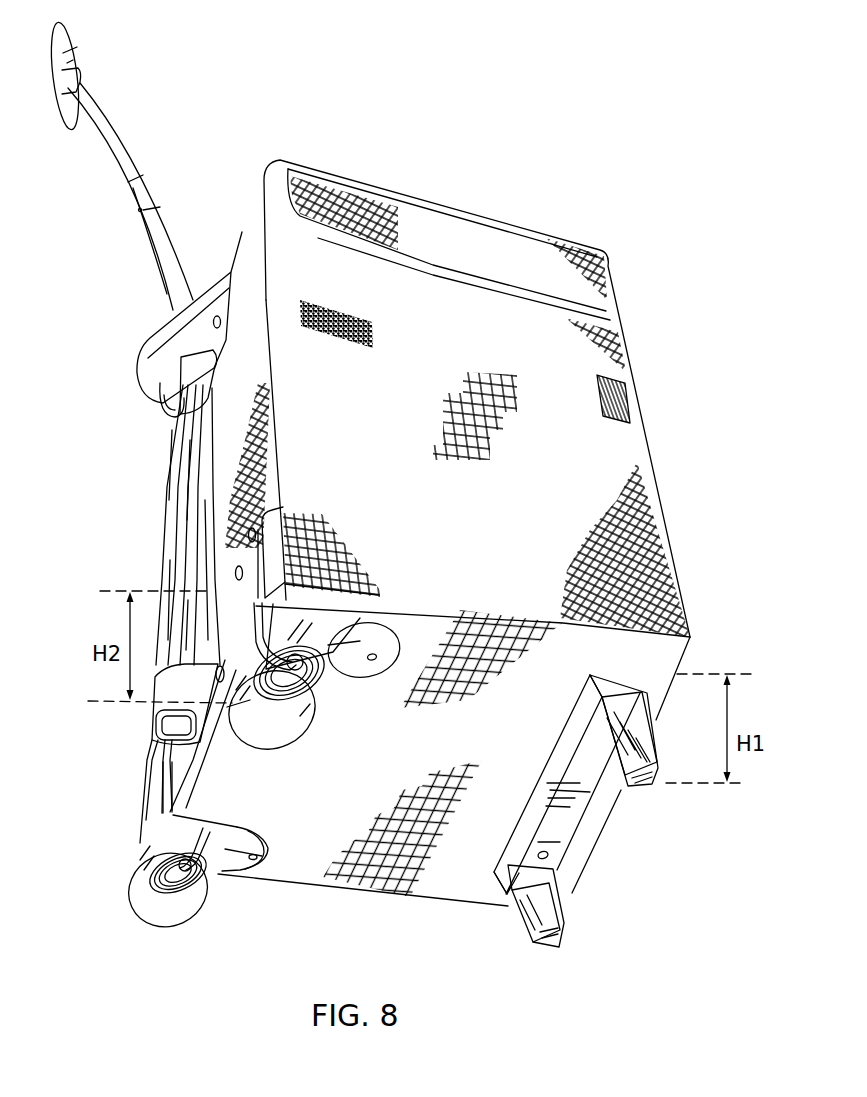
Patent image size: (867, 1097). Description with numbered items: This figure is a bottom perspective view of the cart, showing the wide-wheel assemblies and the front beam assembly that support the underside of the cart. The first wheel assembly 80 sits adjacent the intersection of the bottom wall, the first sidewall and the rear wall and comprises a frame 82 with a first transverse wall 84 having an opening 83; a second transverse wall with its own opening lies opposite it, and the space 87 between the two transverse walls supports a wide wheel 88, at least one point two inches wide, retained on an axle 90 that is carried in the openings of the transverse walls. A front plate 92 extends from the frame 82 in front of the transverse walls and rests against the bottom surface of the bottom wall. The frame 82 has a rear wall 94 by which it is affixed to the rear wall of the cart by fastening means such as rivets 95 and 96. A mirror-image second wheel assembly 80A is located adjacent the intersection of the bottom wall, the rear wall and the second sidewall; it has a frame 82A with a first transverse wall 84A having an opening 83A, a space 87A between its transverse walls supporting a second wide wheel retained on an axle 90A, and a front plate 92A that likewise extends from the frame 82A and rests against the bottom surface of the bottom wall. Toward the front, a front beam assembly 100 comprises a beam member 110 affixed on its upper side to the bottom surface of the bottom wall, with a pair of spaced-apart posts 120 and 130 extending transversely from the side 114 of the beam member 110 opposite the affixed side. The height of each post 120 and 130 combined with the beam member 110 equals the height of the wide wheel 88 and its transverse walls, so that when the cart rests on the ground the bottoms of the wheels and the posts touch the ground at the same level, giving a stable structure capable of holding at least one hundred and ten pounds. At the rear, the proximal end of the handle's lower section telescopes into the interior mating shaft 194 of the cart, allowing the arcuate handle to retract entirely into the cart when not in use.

The interior mating shaft 194 is at (181, 489).
The rivet 96 is at (240, 577).
The rivet 95 is at (262, 530).
The rear wall 94 is at (283, 553).
The frame 82 is at (272, 592).
The first transverse wall 84 is at (343, 620).
The front plate 92 is at (383, 645).
The opening 83 is at (320, 660).
The space 87 is at (371, 667).
The first wheel assembly 80 is at (328, 708).
The axle 90 is at (296, 668).
The wide wheel 88 is at (270, 710).
The frame 82A is at (218, 813).
The front plate 92A is at (266, 849).
The axle 90A is at (185, 865).
The opening 83A is at (191, 890).
The first transverse wall 84A is at (203, 890).
The space 87A is at (233, 887).
The second wheel assembly 80A is at (238, 914).
The post 120 is at (647, 750).
The beam member 110 is at (590, 793).
The front beam assembly 100 is at (615, 823).
The side 114 is at (548, 857).
The post 130 is at (558, 913).